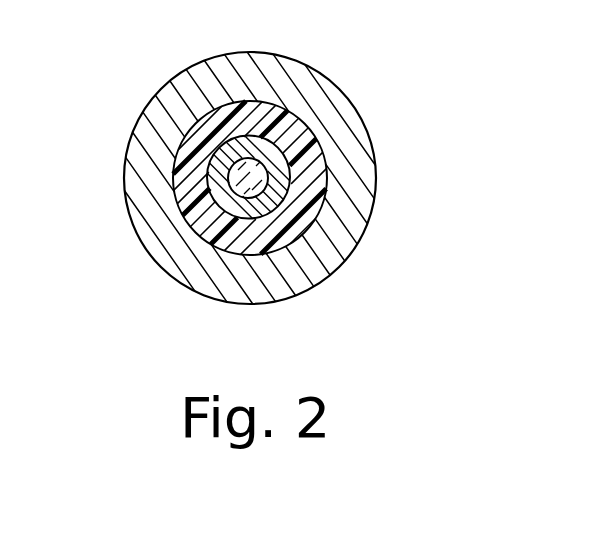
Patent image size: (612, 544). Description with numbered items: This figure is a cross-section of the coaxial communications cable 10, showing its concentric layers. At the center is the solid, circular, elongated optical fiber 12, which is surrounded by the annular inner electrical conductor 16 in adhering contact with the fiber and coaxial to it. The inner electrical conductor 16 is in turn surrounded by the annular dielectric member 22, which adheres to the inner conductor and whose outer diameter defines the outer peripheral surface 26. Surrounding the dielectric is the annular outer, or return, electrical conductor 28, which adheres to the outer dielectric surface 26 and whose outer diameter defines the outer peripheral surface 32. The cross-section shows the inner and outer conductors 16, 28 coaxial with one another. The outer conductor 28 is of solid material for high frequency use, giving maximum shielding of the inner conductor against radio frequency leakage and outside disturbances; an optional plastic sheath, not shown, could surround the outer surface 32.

The coaxial communications cable 10 is at (361, 53).
The optical fiber 12 is at (228, 178).
The inner electrical conductor 16 is at (252, 229).
The dielectric member 22 is at (306, 236).
The outer peripheral surface of the dielectric 26 is at (320, 153).
The outer electrical conductor 28 is at (165, 95).
The outer peripheral surface of the outer conductor 32 is at (285, 60).